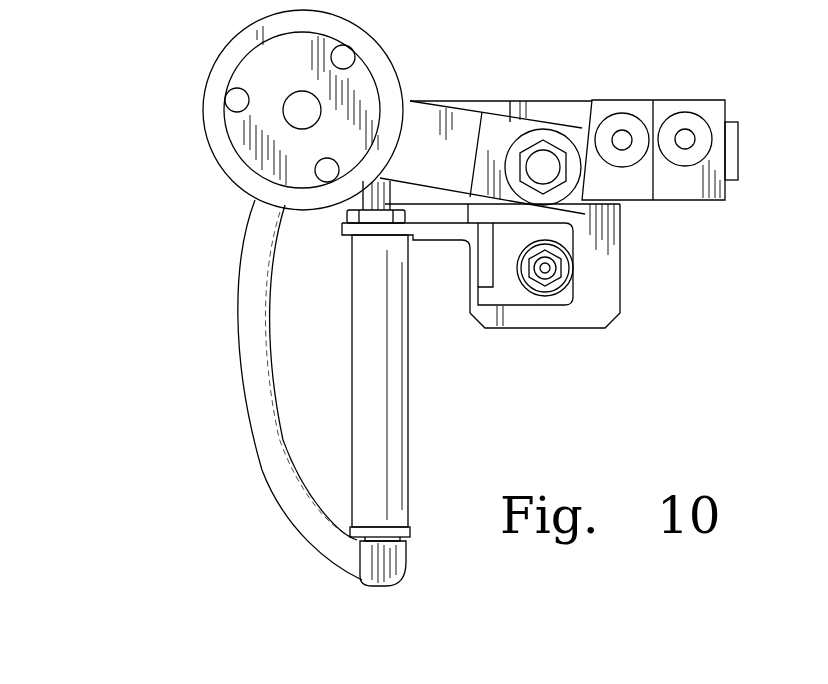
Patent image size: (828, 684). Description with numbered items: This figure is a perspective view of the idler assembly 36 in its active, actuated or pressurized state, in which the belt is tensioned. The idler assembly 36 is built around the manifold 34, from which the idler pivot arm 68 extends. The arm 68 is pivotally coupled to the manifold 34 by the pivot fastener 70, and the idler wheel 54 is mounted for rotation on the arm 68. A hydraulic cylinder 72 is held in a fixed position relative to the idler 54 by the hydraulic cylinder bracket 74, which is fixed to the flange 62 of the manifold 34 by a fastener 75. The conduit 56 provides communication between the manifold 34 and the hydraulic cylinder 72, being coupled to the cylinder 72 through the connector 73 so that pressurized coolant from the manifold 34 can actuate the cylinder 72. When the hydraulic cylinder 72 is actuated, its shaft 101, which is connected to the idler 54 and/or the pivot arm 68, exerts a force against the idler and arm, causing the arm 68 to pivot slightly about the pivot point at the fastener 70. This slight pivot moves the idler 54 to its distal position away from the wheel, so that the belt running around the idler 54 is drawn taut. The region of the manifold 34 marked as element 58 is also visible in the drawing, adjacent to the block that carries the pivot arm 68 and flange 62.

The manifold 34 is at (725, 100).
The idler assembly 36 is at (125, 527).
The idler wheel 54 is at (237, 132).
The conduit 56 is at (252, 397).
The block bores 58 is at (667, 194).
The flange 62 is at (618, 290).
The idler pivot arm 68 is at (413, 100).
The pivot fastener 70 is at (543, 160).
The hydraulic cylinder 72 is at (405, 387).
The connector 73 is at (367, 577).
The hydraulic cylinder bracket 74 is at (460, 235).
The fastener 75 is at (545, 275).
The shaft 101 is at (343, 210).